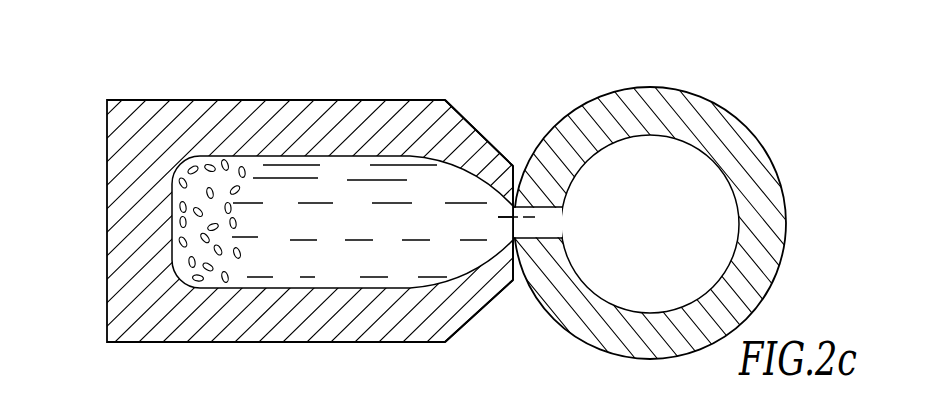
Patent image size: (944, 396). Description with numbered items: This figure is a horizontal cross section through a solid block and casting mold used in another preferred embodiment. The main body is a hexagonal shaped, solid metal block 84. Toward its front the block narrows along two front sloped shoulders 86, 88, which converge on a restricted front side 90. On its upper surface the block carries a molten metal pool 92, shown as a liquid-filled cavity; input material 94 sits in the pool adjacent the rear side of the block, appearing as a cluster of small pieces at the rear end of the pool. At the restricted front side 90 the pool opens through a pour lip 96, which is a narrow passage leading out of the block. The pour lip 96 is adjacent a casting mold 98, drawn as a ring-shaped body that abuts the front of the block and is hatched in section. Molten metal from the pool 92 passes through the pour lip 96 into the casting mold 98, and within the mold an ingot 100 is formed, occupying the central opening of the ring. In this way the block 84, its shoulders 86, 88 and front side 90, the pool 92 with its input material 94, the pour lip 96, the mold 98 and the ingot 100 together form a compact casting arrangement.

The solid metal block 84 is at (283, 98).
The front sloped shoulder 86 is at (470, 322).
The front sloped shoulder 88 is at (483, 136).
The restricted front side 90 is at (517, 273).
The molten metal pool 92 is at (335, 187).
The input material 94 is at (197, 170).
The pour lip 96 is at (542, 221).
The casting mold 98 is at (782, 188).
The ingot 100 is at (702, 170).